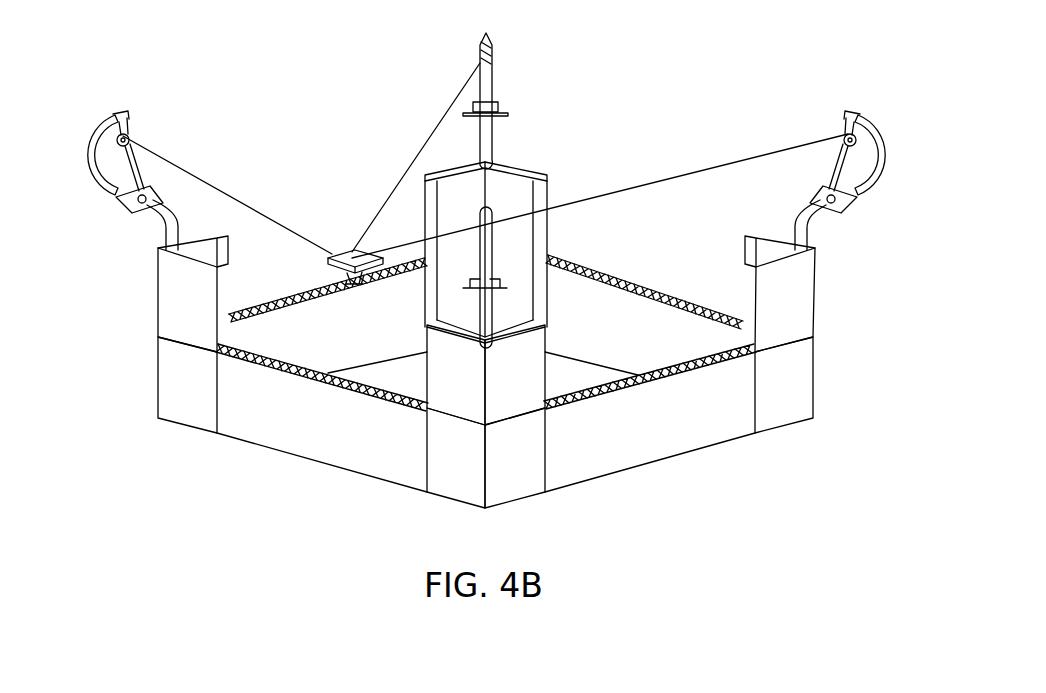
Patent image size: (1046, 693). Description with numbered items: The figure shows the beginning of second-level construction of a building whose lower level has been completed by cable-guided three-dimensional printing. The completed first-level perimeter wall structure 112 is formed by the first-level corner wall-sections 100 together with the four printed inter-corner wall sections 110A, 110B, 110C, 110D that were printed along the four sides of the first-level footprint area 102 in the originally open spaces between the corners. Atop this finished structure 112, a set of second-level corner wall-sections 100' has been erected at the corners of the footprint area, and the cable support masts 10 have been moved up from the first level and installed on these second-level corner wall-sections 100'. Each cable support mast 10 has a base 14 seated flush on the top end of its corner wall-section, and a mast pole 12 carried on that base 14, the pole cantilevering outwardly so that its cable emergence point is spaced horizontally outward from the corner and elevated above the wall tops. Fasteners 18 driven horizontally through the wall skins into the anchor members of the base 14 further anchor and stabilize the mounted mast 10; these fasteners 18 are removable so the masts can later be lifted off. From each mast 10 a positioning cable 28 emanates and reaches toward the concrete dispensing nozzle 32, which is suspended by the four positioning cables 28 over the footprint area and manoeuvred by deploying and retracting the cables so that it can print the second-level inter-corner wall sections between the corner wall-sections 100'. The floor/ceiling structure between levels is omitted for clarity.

The cable support mast 10 is at (80, 119).
The mast pole 12 is at (100, 192).
The base 14 is at (190, 240).
The fasteners 18 is at (432, 219).
The positioning cable 28 is at (216, 181).
The concrete dispensing nozzle 32 is at (354, 250).
The corner wall-section 100 is at (487, 437).
The second-level corner wall-section 100' is at (488, 325).
The footprint area 102 is at (420, 385).
The inter-corner wall section 110A is at (347, 340).
The inter-corner wall section 110B is at (318, 430).
The inter-corner wall section 110C is at (662, 438).
The inter-corner wall section 110D is at (655, 337).
The first-level perimeter wall structure 112 is at (292, 471).